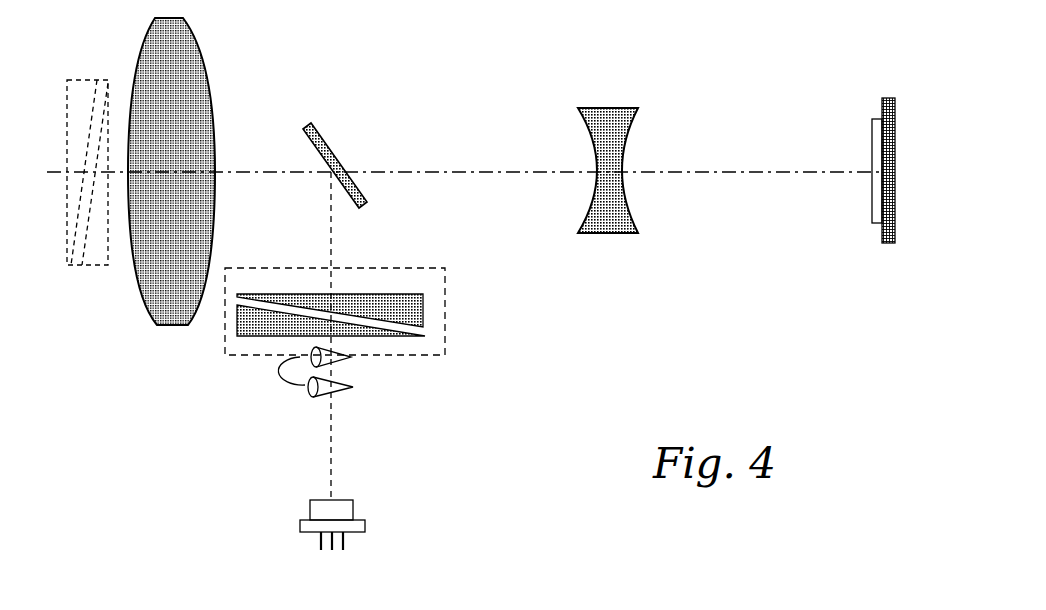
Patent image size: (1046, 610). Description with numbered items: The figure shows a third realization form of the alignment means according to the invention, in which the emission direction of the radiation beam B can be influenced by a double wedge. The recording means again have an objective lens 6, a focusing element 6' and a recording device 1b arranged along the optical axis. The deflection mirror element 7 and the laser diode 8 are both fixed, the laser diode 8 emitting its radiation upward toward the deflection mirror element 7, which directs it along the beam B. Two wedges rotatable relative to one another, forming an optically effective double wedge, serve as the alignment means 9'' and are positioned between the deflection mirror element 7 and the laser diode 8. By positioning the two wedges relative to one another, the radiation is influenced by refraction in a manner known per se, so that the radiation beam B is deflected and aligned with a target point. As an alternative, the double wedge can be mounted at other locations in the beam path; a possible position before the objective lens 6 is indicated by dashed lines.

The objective lens 6 is at (146, 224).
The deflection mirror element 7 is at (381, 152).
The alignment means 9'' is at (394, 332).
The laser diode 8 is at (392, 505).
The focusing element 6' is at (667, 236).
The recording device 1b is at (807, 189).
The beam B is at (782, 154).